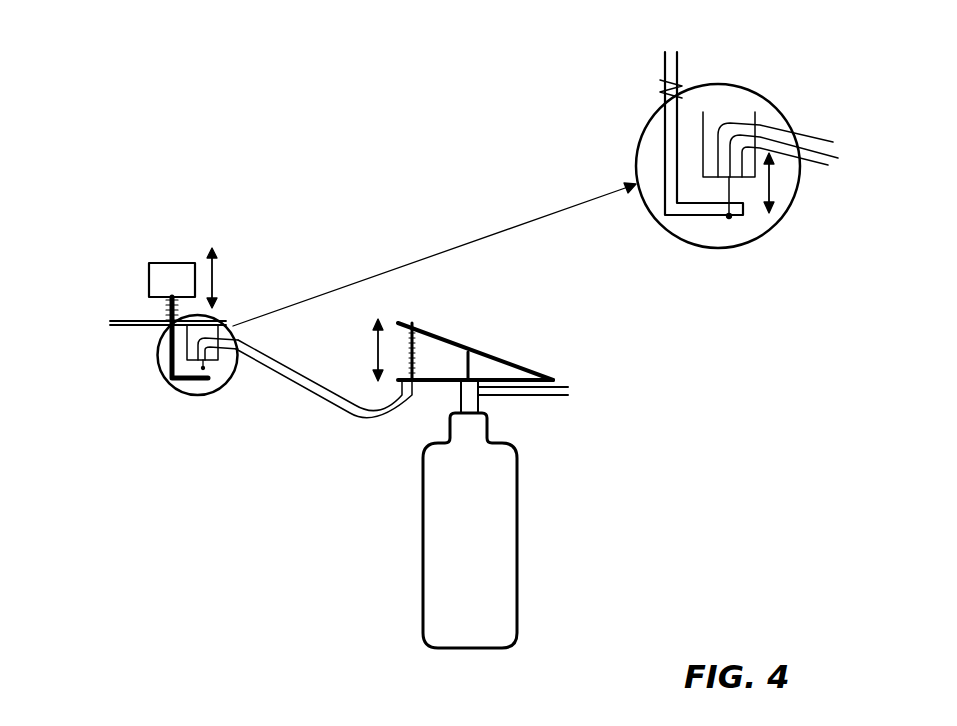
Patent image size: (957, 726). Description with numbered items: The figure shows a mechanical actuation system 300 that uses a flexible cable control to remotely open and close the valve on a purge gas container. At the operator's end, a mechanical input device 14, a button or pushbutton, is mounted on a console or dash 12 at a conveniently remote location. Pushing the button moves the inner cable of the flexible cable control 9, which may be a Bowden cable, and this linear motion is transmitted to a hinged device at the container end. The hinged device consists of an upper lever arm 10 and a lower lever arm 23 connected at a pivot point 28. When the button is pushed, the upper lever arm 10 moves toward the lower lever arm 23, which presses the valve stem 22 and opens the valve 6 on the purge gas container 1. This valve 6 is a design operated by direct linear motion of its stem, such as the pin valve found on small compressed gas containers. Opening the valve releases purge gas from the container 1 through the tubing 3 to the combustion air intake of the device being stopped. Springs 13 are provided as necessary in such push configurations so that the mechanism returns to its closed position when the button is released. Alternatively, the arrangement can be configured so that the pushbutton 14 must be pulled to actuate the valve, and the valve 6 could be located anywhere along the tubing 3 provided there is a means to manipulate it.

The purge gas container 1 is at (423, 582).
The tubing 3 is at (528, 398).
The valve 6 is at (458, 399).
The flexible cable control 9 is at (290, 379).
The upper lever arm 10 is at (532, 377).
The console or dash 12 is at (115, 332).
The springs 13 is at (170, 313).
The mechanical input device 14 is at (171, 262).
The valve stem 22 is at (472, 360).
The lower lever arm 23 is at (423, 378).
The pivot point 28 is at (568, 387).
The system 300 is at (245, 514).